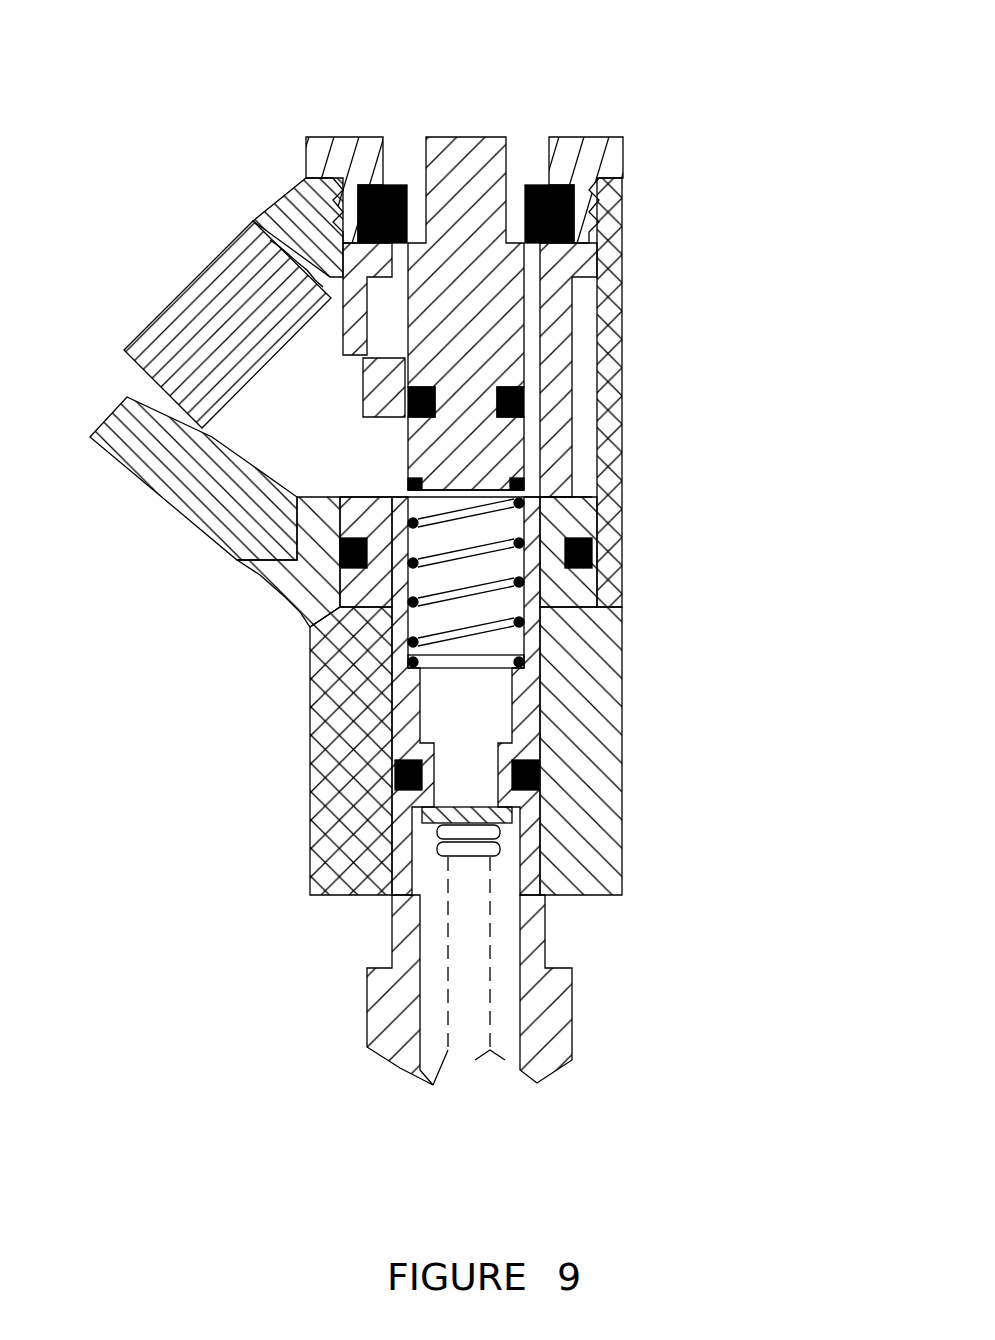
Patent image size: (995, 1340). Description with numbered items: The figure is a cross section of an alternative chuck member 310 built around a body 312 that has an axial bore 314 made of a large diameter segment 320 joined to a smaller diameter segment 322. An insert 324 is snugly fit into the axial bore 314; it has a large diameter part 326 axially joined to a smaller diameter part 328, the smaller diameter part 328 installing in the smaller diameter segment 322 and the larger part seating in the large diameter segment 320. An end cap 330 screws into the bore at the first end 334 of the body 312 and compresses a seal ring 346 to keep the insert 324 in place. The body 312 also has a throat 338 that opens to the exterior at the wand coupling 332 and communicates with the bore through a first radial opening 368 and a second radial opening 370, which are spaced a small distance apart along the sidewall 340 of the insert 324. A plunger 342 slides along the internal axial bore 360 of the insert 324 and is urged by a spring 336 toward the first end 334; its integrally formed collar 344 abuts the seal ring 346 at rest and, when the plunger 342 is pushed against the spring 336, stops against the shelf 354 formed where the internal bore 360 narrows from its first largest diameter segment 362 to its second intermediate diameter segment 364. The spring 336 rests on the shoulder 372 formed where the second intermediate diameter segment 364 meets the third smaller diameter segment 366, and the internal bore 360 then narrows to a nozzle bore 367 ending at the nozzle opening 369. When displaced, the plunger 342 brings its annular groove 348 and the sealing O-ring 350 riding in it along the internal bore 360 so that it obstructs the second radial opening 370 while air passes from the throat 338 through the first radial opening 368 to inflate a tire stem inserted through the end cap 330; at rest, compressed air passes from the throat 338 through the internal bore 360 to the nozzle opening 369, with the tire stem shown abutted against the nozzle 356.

The chuck member 310 is at (640, 485).
The body 312 is at (622, 663).
The axial bore 314 is at (583, 360).
The large diameter segment 320 is at (580, 322).
The smaller diameter segment 322 is at (545, 733).
The insert 324 is at (580, 517).
The large diameter part 326 is at (597, 237).
The smaller diameter part 328 is at (533, 705).
The end cap 330 is at (567, 230).
The wand coupling 332 is at (183, 383).
The first end 334 is at (311, 137).
The spring 336 is at (412, 662).
The throat 338 is at (262, 442).
The sidewall 340 is at (362, 375).
The plunger 342 is at (470, 137).
The collar 344 is at (391, 233).
The seal ring 346 is at (575, 200).
The annular groove 348 is at (360, 555).
The sealing O-ring 350 is at (525, 397).
The shelf 354 is at (350, 355).
The nozzle 356 is at (480, 785).
The internal axial bore 360 is at (422, 623).
The first largest diameter segment 362 is at (537, 317).
The second intermediate diameter segment 364 is at (527, 447).
The third smaller diameter segment 366 is at (470, 815).
The nozzle bore 367 is at (482, 778).
The first radial opening 368 is at (370, 322).
The nozzle opening 369 is at (462, 828).
The second radial opening 370 is at (370, 440).
The shoulder 372 is at (400, 712).